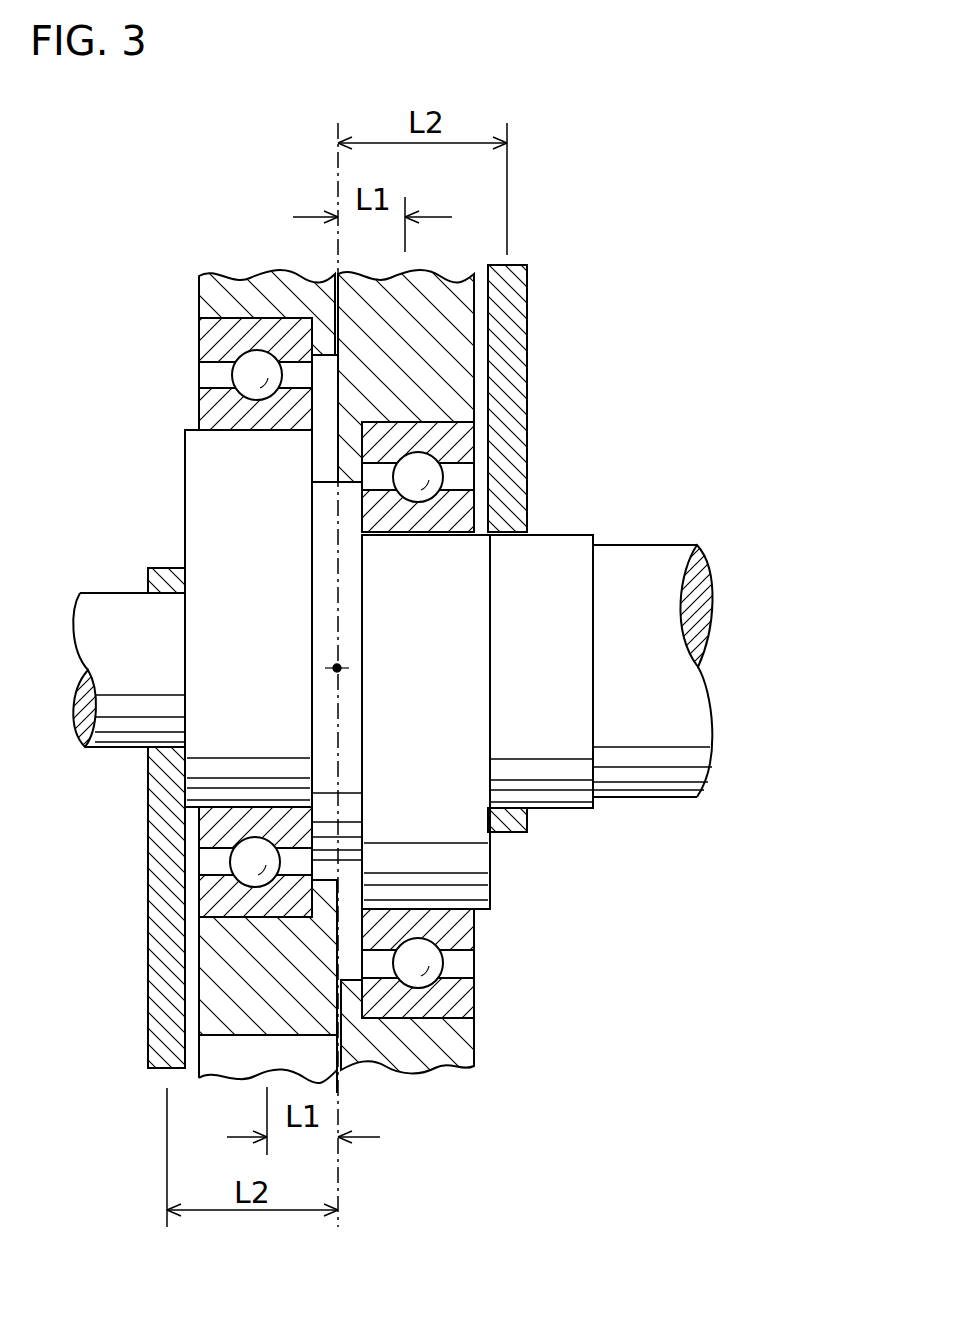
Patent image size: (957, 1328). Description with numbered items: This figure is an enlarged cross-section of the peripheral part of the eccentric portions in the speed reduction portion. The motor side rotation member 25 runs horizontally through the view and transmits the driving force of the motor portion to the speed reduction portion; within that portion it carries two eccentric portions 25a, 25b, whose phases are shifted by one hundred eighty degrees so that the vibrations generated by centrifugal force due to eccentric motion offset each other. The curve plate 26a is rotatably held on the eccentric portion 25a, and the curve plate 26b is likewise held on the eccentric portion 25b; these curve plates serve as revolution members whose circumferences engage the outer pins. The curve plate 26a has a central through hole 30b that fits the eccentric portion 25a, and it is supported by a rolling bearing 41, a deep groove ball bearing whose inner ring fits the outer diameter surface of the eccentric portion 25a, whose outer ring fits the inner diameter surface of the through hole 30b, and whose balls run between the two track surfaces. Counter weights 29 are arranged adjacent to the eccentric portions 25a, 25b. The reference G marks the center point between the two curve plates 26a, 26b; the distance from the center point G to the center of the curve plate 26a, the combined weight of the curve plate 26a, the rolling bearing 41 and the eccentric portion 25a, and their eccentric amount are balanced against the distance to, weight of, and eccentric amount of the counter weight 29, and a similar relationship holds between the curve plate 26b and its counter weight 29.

The motor side rotation member 25 is at (680, 698).
The eccentric portion 25a is at (453, 671).
The eccentric portion 25b is at (277, 570).
The curve plate 26a is at (433, 1040).
The curve plate 26b is at (228, 291).
The counter weight 29 is at (507, 428).
The through hole 30b is at (440, 415).
The rolling bearing 41 is at (184, 404).
The center point G is at (341, 672).